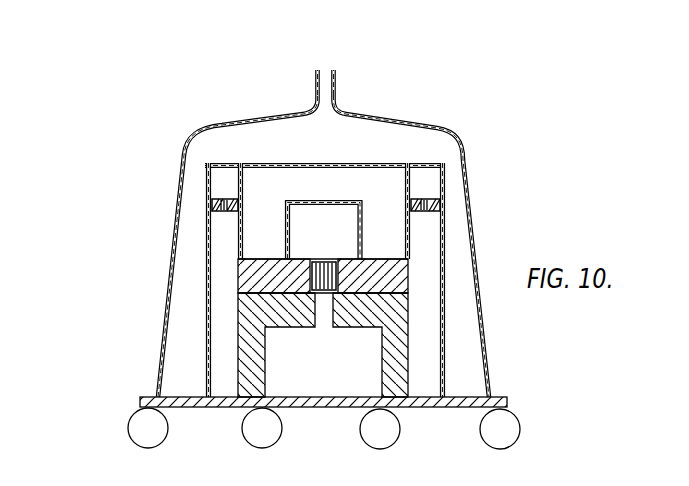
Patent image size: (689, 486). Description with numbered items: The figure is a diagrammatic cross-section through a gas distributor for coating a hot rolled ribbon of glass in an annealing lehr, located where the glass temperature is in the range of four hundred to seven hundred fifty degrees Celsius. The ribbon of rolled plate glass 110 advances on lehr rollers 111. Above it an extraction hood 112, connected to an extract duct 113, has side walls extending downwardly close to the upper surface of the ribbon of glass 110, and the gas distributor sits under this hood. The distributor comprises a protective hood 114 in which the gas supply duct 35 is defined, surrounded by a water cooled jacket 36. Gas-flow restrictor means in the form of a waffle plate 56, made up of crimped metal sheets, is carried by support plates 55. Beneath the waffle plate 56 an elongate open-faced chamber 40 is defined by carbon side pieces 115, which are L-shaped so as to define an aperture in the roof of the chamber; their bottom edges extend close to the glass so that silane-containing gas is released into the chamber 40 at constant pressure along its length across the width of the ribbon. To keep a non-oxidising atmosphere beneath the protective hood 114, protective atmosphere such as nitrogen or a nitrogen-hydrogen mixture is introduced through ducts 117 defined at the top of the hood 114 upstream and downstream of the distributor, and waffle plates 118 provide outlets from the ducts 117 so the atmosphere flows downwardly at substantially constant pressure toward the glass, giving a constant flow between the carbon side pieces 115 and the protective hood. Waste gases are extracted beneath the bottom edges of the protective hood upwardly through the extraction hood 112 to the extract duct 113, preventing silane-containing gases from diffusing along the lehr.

The extraction hood 112 is at (374, 118).
The extract duct 113 is at (315, 85).
The protective hood 114 is at (311, 163).
The ducts 117 is at (227, 172).
The water cooled jacket 36 is at (272, 185).
The waffle plates 118 is at (228, 212).
The gas supply duct 35 is at (340, 228).
The support plates 55 is at (397, 276).
The waffle plate 56 is at (326, 262).
The elongate open-faced chamber 40 is at (332, 376).
The ribbon of rolled plate glass 110 is at (150, 397).
The lehr rollers 111 is at (132, 428).
The carbon side pieces 115 is at (238, 394).